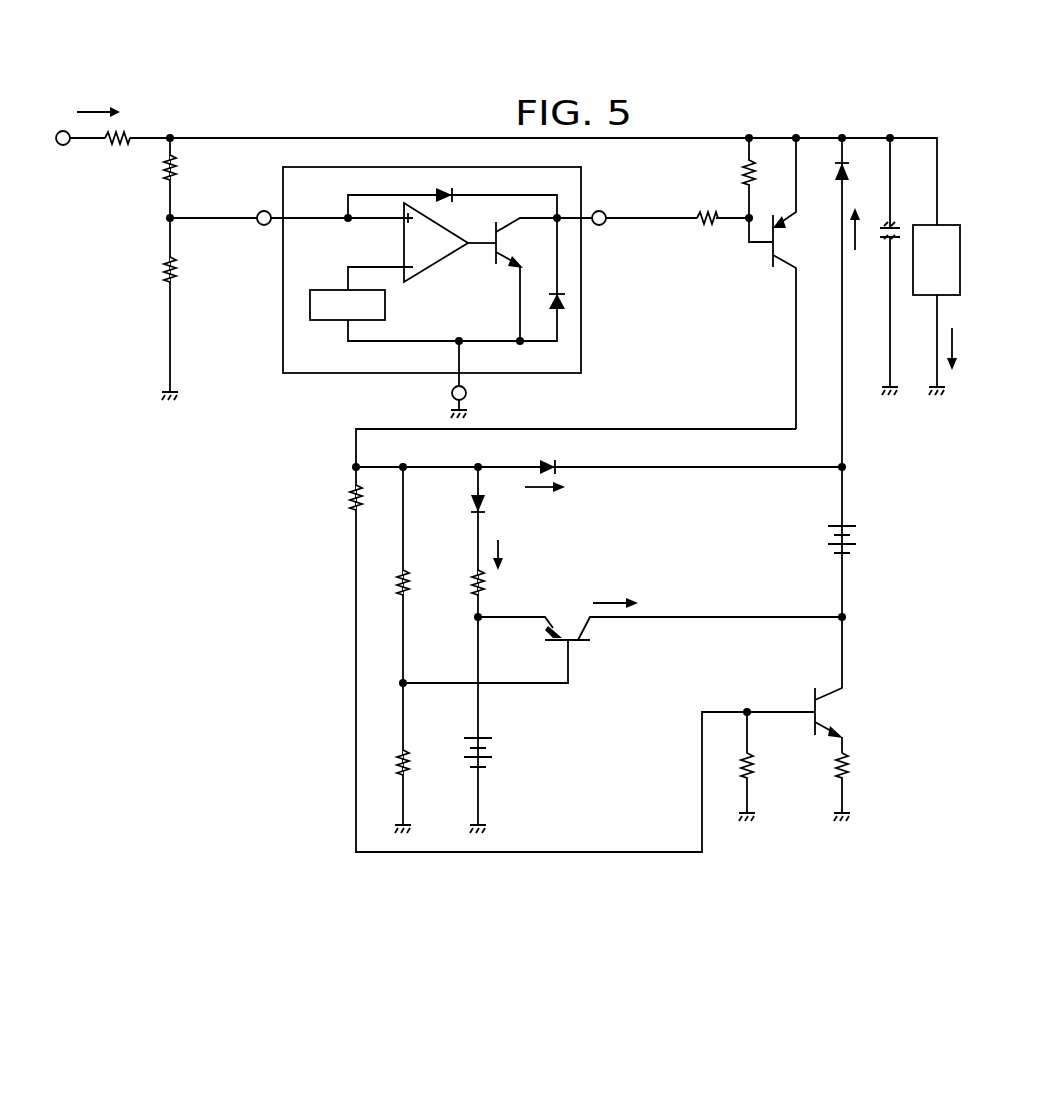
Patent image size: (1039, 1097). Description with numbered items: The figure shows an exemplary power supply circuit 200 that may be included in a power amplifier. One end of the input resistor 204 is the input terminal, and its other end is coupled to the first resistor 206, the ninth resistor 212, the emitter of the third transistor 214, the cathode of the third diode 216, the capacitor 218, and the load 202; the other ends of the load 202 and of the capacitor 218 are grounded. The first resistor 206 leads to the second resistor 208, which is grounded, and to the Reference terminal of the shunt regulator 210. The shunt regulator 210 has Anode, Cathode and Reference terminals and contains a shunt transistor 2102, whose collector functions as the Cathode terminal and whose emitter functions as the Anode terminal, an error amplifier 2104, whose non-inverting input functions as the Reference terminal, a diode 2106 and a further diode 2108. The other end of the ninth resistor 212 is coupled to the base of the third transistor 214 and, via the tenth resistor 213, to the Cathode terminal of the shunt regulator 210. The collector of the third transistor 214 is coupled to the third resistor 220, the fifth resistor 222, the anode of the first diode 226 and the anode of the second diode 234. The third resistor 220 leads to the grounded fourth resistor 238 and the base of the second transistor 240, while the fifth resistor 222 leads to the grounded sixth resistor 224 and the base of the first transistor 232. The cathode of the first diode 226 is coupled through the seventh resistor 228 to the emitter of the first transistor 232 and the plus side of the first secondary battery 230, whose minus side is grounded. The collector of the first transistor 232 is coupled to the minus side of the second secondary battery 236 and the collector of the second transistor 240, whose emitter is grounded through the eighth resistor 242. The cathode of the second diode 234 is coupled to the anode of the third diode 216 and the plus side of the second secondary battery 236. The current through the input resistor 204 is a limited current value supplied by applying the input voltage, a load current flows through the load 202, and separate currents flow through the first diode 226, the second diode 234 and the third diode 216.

The power supply circuit 200 is at (1029, 822).
The load 202 is at (961, 262).
The resistor (R0) 204 is at (128, 133).
The resistor (R1) 206 is at (178, 165).
The resistor (R2) 208 is at (176, 281).
The shunt regulator 210 is at (545, 167).
The shunt transistor 2102 is at (510, 272).
The error amplifier 2104 is at (438, 262).
The diode 2106 is at (453, 195).
The diode 2108 is at (566, 300).
The resistor (R9) 212 is at (753, 178).
The resistor (R10) 213 is at (705, 212).
The transistor (Tr3) 214 is at (780, 245).
The diode (D3) 216 is at (850, 172).
The capacitor (C0) 218 is at (885, 238).
The resistor (R3) 220 is at (353, 506).
The resistor (R5) 222 is at (406, 596).
The resistor (R6) 224 is at (406, 776).
The diode (D1) 226 is at (474, 496).
The resistor (R7) 228 is at (482, 596).
The secondary battery (BT1) 230 is at (496, 752).
The transistor (Tr1) 232 is at (568, 650).
The diode (D2) 234 is at (556, 465).
The secondary battery (BT2) 236 is at (858, 543).
The resistor (R4) 238 is at (752, 757).
The transistor (Tr2) 240 is at (823, 712).
The resistor (R8) 242 is at (846, 757).